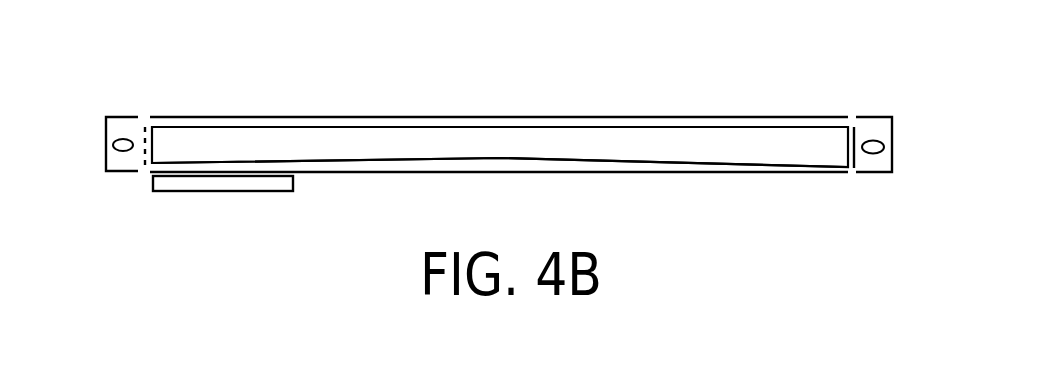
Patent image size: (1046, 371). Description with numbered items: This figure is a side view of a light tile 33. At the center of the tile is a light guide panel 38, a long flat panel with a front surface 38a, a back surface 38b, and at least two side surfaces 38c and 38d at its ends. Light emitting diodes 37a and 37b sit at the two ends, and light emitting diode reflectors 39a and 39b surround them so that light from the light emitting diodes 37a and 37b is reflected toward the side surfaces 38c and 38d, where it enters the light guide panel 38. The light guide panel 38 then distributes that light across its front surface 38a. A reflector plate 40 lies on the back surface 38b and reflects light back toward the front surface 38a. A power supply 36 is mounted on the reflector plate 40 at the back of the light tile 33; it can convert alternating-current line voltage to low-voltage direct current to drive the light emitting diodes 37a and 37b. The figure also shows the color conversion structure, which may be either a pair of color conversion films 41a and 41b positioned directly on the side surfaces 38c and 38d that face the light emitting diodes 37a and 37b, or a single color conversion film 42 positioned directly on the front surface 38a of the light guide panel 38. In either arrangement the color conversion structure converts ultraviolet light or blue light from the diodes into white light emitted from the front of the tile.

The light tile 33 is at (257, 90).
The power supply 36 is at (223, 182).
The light emitting diode 37a is at (114, 143).
The light emitting diode 37b is at (886, 143).
The light guide panel 38 is at (500, 147).
The front surface 38a is at (525, 125).
The back surface 38b is at (627, 162).
The side surface 38c is at (146, 165).
The side surface 38d is at (852, 167).
The light emitting diode reflector 39a is at (112, 173).
The light emitting diode reflector 39b is at (888, 173).
The reflector plate 40 is at (742, 173).
The color conversion film 41a is at (141, 130).
The color conversion film 41b is at (861, 132).
The color conversion film 42 is at (597, 120).